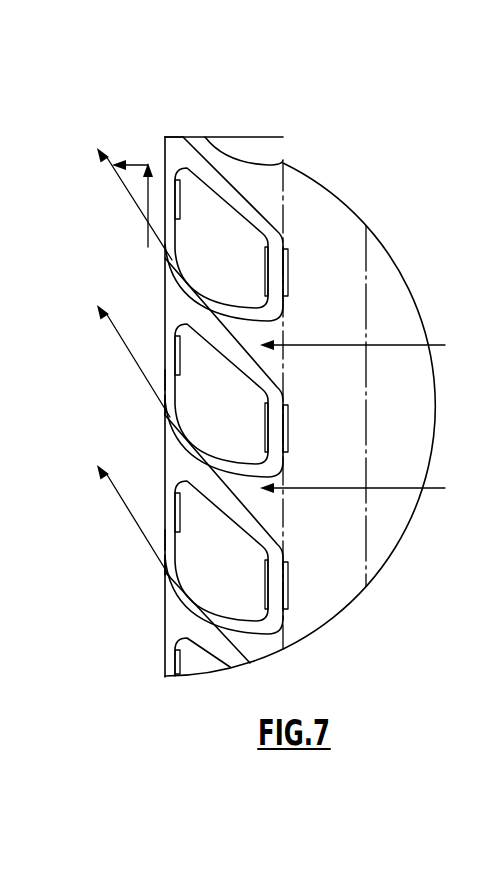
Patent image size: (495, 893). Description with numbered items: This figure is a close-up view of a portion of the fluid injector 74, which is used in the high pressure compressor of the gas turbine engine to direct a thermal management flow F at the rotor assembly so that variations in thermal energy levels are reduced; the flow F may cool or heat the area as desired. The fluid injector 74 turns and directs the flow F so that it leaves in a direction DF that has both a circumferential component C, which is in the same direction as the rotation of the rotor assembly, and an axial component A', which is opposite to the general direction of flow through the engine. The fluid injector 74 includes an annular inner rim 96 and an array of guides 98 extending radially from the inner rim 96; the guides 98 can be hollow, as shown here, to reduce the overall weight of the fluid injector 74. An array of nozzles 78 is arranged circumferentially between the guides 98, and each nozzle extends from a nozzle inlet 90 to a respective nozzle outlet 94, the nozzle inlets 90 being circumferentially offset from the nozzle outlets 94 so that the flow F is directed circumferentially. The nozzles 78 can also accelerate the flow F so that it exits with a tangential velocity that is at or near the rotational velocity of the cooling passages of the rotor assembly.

The fluid injector 74 is at (347, 152).
The array of nozzles 78 is at (156, 410).
The nozzle inlet 90 is at (286, 370).
The nozzle outlet 94 is at (153, 368).
The inner rim 96 is at (277, 333).
The array of guides 98 is at (288, 246).
The axial component A' is at (137, 184).
The circumferential component C is at (165, 140).
The flow direction DF is at (105, 519).
The thermal management flow F is at (359, 417).